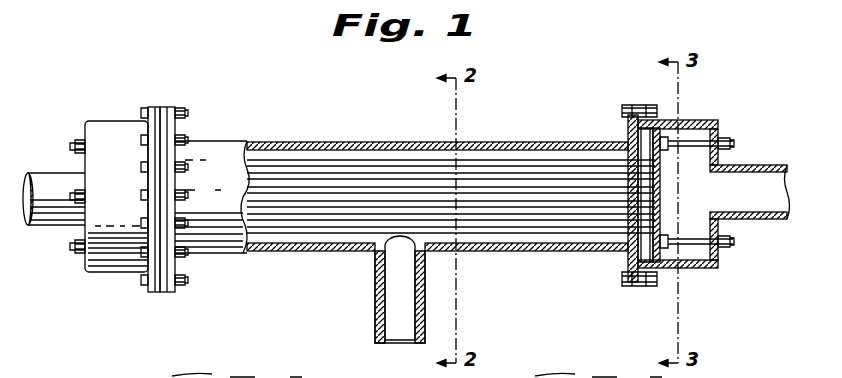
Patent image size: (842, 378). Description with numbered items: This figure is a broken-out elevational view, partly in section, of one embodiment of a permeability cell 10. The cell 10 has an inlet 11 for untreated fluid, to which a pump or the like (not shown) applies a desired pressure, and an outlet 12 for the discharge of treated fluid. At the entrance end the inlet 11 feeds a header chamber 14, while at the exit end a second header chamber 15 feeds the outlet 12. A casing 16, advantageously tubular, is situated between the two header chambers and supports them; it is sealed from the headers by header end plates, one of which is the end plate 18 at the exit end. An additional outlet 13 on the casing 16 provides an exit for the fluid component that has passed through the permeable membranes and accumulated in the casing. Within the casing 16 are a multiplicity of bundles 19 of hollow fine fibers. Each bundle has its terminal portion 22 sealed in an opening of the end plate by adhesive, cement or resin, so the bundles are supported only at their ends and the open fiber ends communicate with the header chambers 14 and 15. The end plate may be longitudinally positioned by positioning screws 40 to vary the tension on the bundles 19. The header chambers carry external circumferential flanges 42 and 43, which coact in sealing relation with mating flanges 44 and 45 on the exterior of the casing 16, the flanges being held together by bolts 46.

The permeability cell 10 is at (237, 144).
The inlet 11 is at (40, 177).
The outlet 12 is at (757, 166).
The additional outlet 13 is at (377, 325).
The header chamber 14 is at (125, 268).
The second header chamber 15 is at (695, 269).
The casing 16 is at (373, 143).
The header end plate 18 is at (676, 119).
The bundles 19 is at (465, 160).
The terminal portion 22 is at (685, 194).
The positioning screws 40 is at (725, 140).
The external circumferential flange 42 is at (157, 106).
The external circumferential flange 43 is at (635, 106).
The mating flange 44 is at (180, 122).
The mating flange 45 is at (626, 122).
The bolts 46 is at (180, 111).